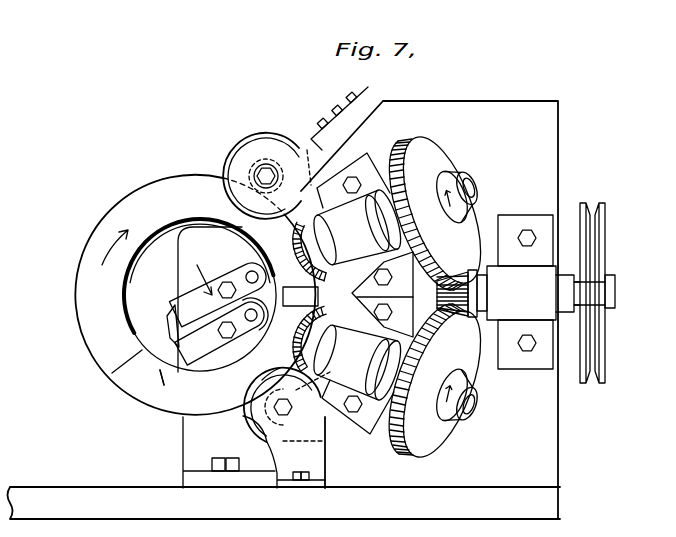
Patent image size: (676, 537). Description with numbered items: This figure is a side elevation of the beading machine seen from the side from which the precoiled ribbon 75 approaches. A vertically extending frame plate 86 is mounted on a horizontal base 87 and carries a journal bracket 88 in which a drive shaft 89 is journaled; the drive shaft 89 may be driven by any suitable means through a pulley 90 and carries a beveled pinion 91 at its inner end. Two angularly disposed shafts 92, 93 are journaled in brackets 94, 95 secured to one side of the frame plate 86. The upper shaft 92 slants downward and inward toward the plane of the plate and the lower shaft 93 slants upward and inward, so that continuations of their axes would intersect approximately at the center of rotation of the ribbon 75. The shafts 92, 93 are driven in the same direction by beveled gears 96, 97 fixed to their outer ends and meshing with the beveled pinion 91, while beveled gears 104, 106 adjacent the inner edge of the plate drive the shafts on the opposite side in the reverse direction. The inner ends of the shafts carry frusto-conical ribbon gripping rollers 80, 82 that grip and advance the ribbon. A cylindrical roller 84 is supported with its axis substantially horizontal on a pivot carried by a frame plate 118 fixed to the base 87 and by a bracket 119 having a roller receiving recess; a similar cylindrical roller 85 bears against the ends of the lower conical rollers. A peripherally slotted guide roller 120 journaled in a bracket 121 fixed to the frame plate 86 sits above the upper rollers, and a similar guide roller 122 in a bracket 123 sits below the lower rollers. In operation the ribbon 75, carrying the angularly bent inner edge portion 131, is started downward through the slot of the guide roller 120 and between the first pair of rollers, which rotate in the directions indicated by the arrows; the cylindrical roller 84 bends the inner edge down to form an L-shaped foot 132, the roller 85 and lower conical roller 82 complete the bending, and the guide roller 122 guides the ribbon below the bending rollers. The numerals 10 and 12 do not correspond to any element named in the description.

The arrow indicator 10 is at (206, 277).
The gear segment 12 is at (294, 253).
The precoiled ribbon 75 is at (184, 173).
The frusto-conical ribbon gripping roller 80 is at (296, 215).
The frusto-conical ribbon gripping roller 82 is at (290, 332).
The cylindrical roller 84 is at (238, 251).
The cylindrical roller 85 is at (262, 344).
The frame plate 86 is at (553, 415).
The base 87 is at (556, 496).
The journal bracket 88 is at (548, 313).
The drive shaft 89 is at (577, 289).
The pulley 90 is at (606, 240).
The beveled pinion 91 is at (472, 263).
The upper shaft 92 is at (471, 197).
The lower shaft 93 is at (472, 405).
The bracket 94 is at (362, 205).
The bracket 95 is at (366, 430).
The beveled gear 96 is at (415, 140).
The beveled gear 97 is at (424, 447).
The beveled gear 104 is at (386, 172).
The beveled gear 106 is at (258, 380).
The frame plate 118 is at (183, 444).
The bracket 119 is at (200, 297).
The peripherally slotted guide roller 120 is at (262, 135).
The bracket 121 is at (313, 140).
The peripherally slotted guide roller 122 is at (257, 430).
The bracket 123 is at (323, 443).
The angularly bent inner edge portion 131 is at (158, 326).
The L-shaped foot 132 is at (175, 392).